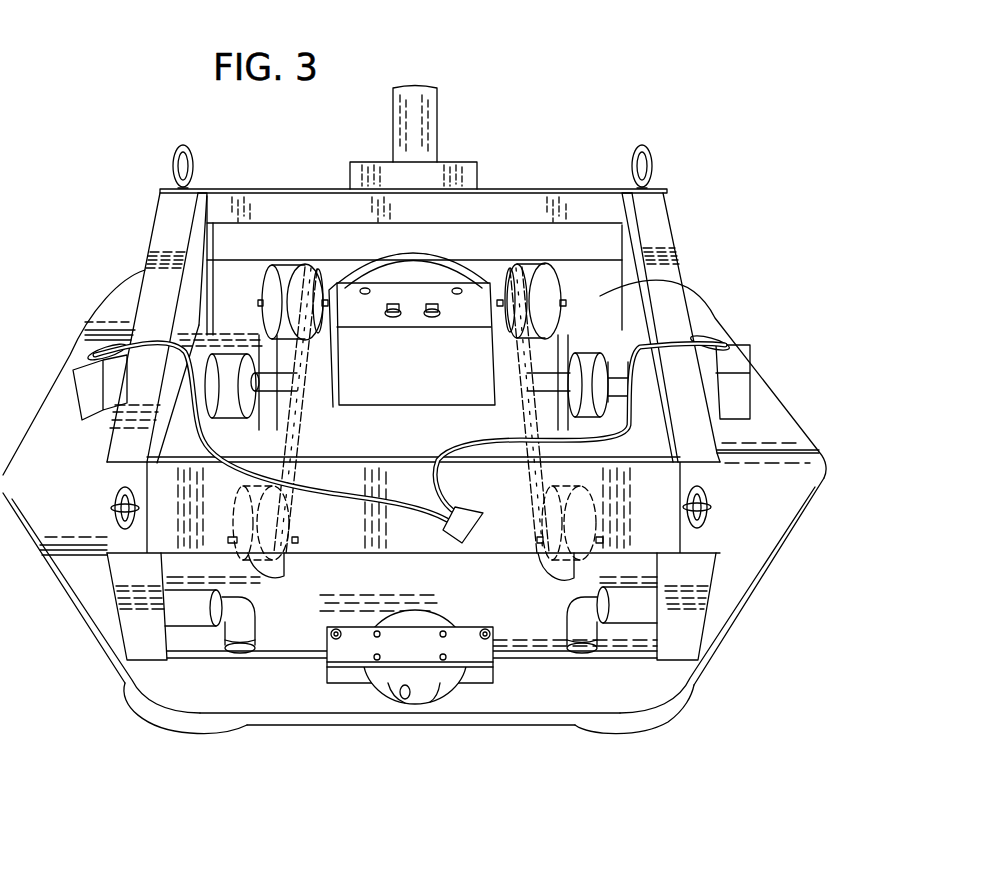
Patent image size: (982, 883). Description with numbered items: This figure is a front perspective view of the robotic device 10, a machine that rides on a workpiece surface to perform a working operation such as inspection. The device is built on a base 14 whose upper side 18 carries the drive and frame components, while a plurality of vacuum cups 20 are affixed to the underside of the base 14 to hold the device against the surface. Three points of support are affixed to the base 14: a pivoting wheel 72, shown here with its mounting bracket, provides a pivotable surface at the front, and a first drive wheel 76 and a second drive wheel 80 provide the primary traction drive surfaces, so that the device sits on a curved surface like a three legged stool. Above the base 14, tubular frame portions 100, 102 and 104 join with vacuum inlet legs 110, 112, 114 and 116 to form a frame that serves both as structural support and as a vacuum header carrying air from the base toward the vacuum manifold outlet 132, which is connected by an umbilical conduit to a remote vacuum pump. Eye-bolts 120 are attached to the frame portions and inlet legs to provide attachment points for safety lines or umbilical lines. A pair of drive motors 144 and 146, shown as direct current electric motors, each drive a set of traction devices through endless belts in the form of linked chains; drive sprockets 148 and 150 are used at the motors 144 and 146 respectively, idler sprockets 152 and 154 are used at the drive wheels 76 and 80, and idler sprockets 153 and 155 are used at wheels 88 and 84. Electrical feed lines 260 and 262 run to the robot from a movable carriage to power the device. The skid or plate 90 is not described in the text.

The robotic device 10 is at (587, 69).
The base 14 is at (710, 645).
The upper side 18 is at (742, 555).
The vacuum cups 20 is at (136, 700).
The pivoting wheel 72 is at (430, 690).
The first drive wheel 76 is at (280, 583).
The second drive wheel 80 is at (546, 570).
The wheel 84 is at (281, 270).
The wheel 88 is at (545, 272).
The skid plate 90 is at (386, 726).
The tubular frame portion 100 is at (163, 225).
The tubular frame portion 102 is at (662, 226).
The tubular frame portion 104 is at (512, 188).
The vacuum inlet leg 110 is at (678, 268).
The vacuum inlet leg 112 is at (205, 287).
The vacuum inlet leg 114 is at (697, 625).
The vacuum inlet leg 116 is at (128, 628).
The eye-bolts 120 is at (178, 148).
The vacuum manifold outlet 132 is at (418, 88).
The drive motor 144 is at (82, 385).
The drive motor 146 is at (742, 383).
The drive sprocket 148 is at (308, 383).
The drive sprocket 150 is at (513, 377).
The idler sprocket 152 is at (520, 363).
The idler sprocket 153 is at (510, 290).
The idler sprocket 154 is at (307, 358).
The idler sprocket 155 is at (327, 280).
The electrical feed line 260 is at (94, 345).
The electrical feed line 262 is at (722, 312).